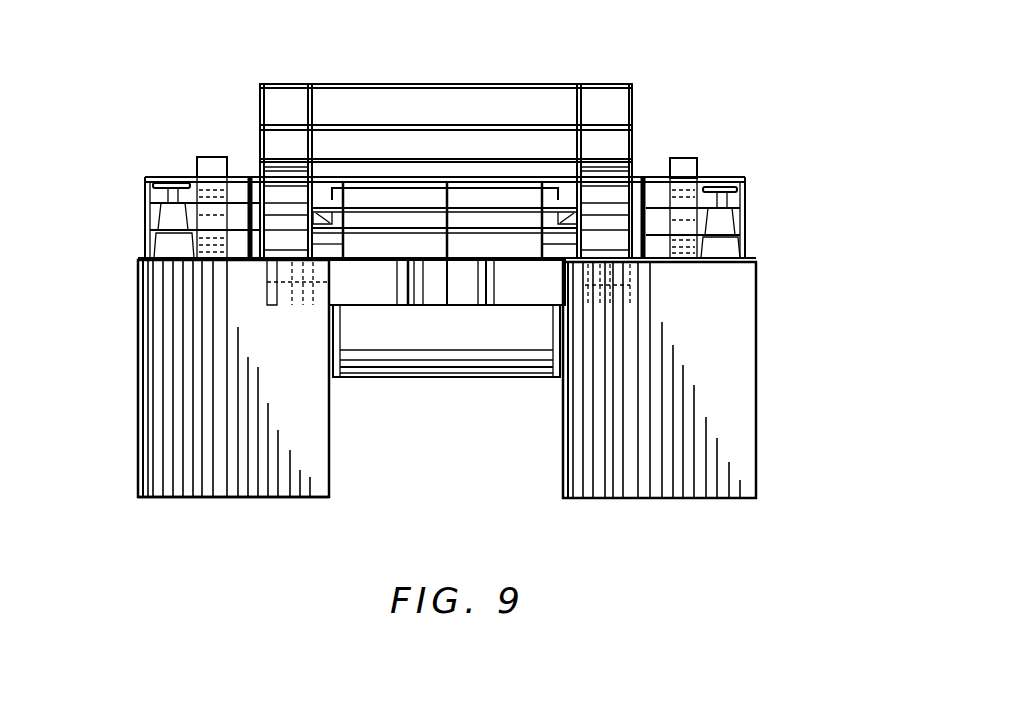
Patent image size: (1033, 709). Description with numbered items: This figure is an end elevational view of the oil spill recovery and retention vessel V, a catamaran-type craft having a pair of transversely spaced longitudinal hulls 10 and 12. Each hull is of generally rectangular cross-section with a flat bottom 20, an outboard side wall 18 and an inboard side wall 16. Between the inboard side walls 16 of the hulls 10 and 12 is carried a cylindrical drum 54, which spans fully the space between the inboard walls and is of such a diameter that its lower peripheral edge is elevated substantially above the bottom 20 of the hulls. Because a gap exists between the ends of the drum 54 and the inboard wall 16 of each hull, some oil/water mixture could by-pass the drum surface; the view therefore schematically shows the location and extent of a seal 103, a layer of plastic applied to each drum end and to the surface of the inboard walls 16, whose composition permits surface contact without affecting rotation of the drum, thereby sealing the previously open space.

The hull 10 is at (112, 519).
The hull 12 is at (682, 512).
The inboard side wall 16 is at (332, 440).
The outboard side wall 18 is at (138, 392).
The flat bottom 20 is at (250, 497).
The cylindrical drum 54 is at (452, 340).
The seal 103 is at (340, 377).
The oil spill recovery and retention vessel V is at (696, 91).